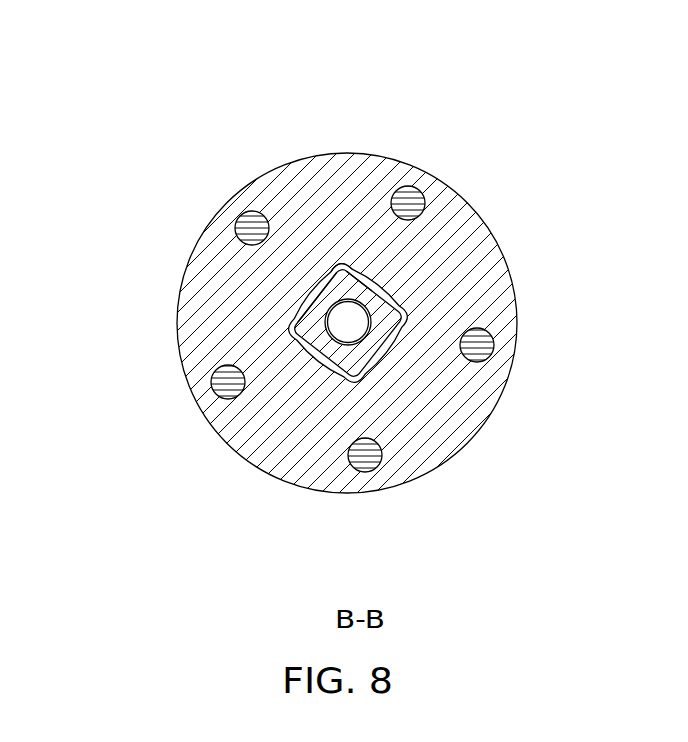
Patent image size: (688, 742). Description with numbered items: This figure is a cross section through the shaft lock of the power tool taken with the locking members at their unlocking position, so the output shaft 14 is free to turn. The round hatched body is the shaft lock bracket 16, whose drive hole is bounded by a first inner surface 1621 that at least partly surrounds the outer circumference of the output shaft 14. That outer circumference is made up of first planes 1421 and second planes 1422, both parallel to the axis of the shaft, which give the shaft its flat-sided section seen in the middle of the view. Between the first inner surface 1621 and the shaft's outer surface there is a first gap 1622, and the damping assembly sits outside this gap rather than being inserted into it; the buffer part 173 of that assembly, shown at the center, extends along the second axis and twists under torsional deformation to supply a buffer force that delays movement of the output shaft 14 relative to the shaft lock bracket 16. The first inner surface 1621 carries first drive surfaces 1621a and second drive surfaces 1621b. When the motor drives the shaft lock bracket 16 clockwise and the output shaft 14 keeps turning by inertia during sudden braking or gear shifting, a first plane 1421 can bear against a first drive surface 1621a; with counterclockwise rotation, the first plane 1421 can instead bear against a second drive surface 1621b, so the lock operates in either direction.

The shaft lock bracket 16 is at (192, 395).
The output shaft 14 is at (362, 352).
The first planes 1421 is at (305, 287).
The second planes 1422 is at (296, 330).
The buffer part 173 is at (352, 312).
The first inner surface 1621 is at (217, 88).
The first drive surfaces 1621a is at (310, 285).
The second drive surfaces 1621b is at (328, 268).
The first gap 1622 is at (362, 270).